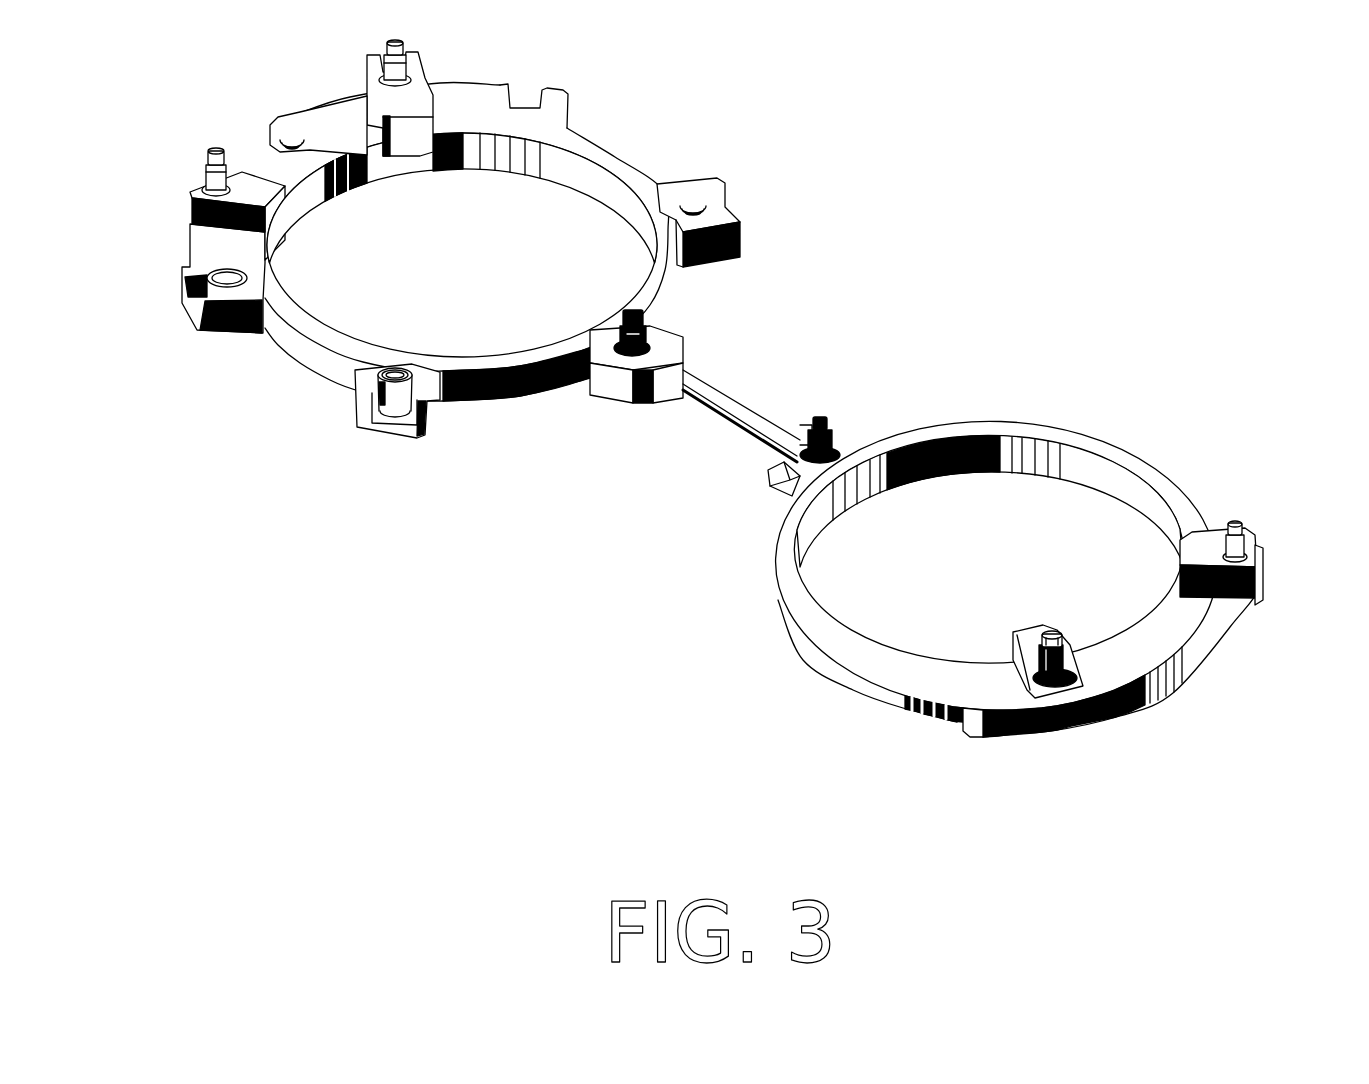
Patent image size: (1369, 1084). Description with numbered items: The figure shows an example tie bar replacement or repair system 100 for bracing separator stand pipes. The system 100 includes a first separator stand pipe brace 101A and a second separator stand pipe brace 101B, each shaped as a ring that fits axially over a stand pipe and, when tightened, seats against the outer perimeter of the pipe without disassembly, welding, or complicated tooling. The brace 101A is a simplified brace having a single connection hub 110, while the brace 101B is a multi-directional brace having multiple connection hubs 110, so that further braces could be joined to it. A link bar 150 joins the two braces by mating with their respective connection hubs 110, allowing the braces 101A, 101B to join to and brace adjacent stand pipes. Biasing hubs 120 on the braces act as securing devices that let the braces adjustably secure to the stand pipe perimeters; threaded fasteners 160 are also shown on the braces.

The tie bar replacement or repair system 100 is at (701, 417).
The first separator stand pipe brace 101A is at (1173, 493).
The second separator stand pipe brace 101B is at (300, 356).
The connection hub 110 is at (806, 433).
The biasing hub 120 is at (356, 130).
The link bar 150 is at (710, 400).
The fastener 160 is at (200, 184).